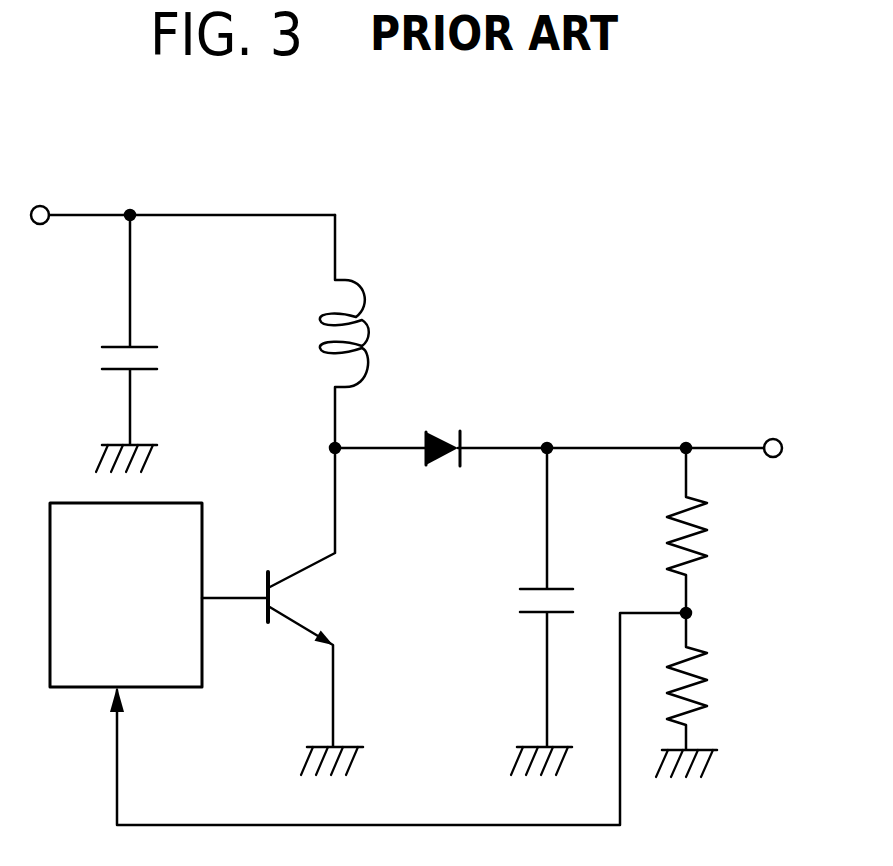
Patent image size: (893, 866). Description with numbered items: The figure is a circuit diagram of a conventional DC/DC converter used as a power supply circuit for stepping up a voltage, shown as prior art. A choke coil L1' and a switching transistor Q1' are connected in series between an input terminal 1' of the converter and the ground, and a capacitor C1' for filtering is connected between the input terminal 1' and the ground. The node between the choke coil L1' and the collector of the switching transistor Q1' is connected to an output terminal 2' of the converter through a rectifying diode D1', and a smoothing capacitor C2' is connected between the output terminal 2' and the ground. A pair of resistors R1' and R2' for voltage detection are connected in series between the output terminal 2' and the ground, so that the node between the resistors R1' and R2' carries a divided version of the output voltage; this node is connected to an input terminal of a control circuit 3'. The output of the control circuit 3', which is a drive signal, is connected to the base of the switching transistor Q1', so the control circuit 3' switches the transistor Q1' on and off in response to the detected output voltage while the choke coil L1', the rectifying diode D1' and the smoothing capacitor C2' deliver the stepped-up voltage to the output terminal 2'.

The input terminal 1' is at (58, 181).
The output terminal 2' is at (792, 417).
The control circuit 3' is at (126, 627).
The capacitor for filtering C1' is at (105, 343).
The choke coil L1' is at (319, 331).
The rectifying diode D1' is at (450, 430).
The switching transistor Q1' is at (297, 611).
The smoothing capacitor C2' is at (529, 611).
The resistor for voltage detection R1' is at (717, 530).
The resistor for voltage detection R2' is at (712, 695).